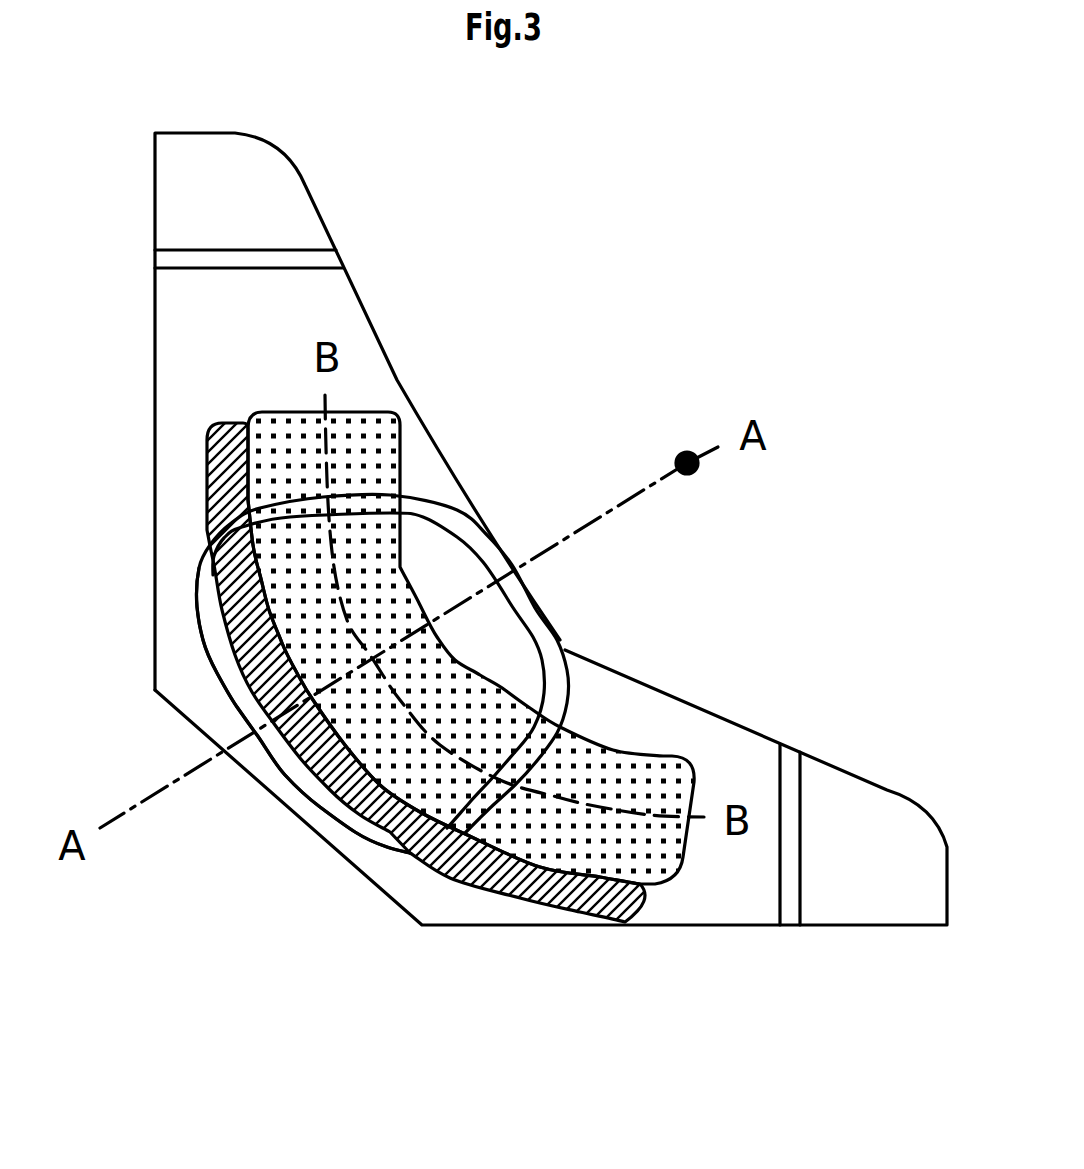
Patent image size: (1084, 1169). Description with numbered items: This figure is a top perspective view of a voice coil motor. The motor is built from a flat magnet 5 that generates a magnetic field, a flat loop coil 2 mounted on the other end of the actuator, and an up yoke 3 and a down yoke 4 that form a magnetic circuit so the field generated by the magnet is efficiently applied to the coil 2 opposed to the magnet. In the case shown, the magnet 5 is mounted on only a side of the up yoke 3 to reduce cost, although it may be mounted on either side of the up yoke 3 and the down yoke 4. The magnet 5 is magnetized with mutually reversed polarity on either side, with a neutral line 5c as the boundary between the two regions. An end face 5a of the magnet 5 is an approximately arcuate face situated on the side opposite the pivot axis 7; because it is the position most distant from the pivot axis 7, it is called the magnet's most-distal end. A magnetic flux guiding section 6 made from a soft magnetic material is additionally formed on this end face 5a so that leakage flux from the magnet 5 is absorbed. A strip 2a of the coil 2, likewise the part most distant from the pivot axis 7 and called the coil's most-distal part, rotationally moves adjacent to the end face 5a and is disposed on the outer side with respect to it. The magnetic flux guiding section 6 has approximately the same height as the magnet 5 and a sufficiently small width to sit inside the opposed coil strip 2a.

The flat loop coil 2 is at (560, 700).
The coil strip 2a is at (300, 793).
The up yoke 3 is at (297, 222).
The down yoke 4 is at (790, 903).
The flat magnet 5 is at (362, 450).
The end face 5a is at (300, 665).
The neutral line 5c is at (405, 708).
The magnetic flux guiding section 6 is at (223, 610).
The pivot axis 7 is at (700, 470).